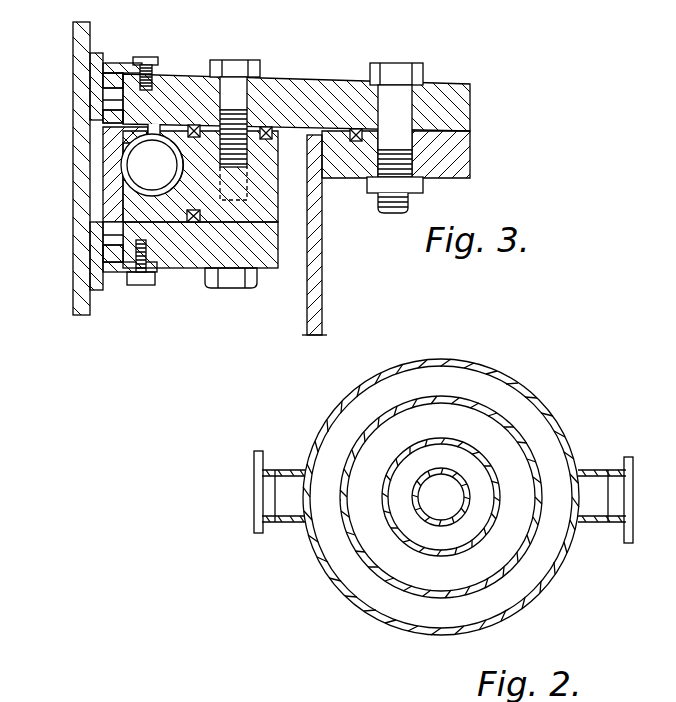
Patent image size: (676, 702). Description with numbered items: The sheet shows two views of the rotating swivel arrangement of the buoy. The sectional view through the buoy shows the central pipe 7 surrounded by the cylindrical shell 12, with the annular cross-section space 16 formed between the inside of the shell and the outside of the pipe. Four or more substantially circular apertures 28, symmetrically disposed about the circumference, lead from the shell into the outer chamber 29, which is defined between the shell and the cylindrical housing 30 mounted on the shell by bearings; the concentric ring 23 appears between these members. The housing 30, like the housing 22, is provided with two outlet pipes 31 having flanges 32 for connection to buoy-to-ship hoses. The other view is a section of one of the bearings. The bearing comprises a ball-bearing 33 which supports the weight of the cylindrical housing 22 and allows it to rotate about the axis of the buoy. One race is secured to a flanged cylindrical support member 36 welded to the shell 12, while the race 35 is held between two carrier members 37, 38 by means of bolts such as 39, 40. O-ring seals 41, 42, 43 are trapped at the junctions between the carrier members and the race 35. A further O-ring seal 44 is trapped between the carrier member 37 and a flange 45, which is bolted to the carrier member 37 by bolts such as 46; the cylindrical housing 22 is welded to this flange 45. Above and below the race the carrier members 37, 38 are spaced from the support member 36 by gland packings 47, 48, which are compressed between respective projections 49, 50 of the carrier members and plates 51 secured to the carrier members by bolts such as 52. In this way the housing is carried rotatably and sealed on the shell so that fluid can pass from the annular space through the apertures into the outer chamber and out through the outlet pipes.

In FIG. 2, the central pipe 7 is at (462, 491).
In FIG. 3, the cylindrical shell 12 is at (80, 296).
In FIG. 2, the cylindrical shell 12 is at (485, 436).
In FIG. 2, the annular cross-section space 16 is at (408, 530).
In FIG. 3, the cylindrical housing 22 is at (315, 271).
In FIG. 2, the intermediate ring 23 is at (508, 456).
In FIG. 2, the apertures 28 is at (450, 396).
In FIG. 2, the outer chamber 29 is at (530, 421).
In FIG. 2, the cylindrical housing 30 is at (562, 578).
In FIG. 2, the outlet pipes 31 is at (292, 468).
In FIG. 2, the flanges 32 is at (257, 457).
In FIG. 3, the ball-bearing 33 is at (158, 153).
In FIG. 3, the race 35 is at (267, 212).
In FIG. 3, the flanged cylindrical support member 36 is at (100, 152).
In FIG. 3, the carrier member 37 is at (445, 92).
In FIG. 3, the carrier member 38 is at (166, 258).
In FIG. 3, the bolt 39 is at (257, 78).
In FIG. 3, the bolt 40 is at (232, 288).
In FIG. 3, the O-ring seal 41 is at (195, 123).
In FIG. 3, the O-ring seal 42 is at (270, 128).
In FIG. 3, the O-ring seal 43 is at (194, 225).
In FIG. 3, the O-ring seal 44 is at (357, 128).
In FIG. 3, the flange 45 is at (465, 152).
In FIG. 3, the bolt 46 is at (400, 74).
In FIG. 3, the gland packing 47 is at (103, 91).
In FIG. 3, the gland packing 48 is at (113, 245).
In FIG. 3, the projection 49 is at (120, 119).
In FIG. 3, the projection 50 is at (113, 224).
In FIG. 3, the plates 51 is at (110, 70).
In FIG. 3, the bolt 52 is at (158, 58).